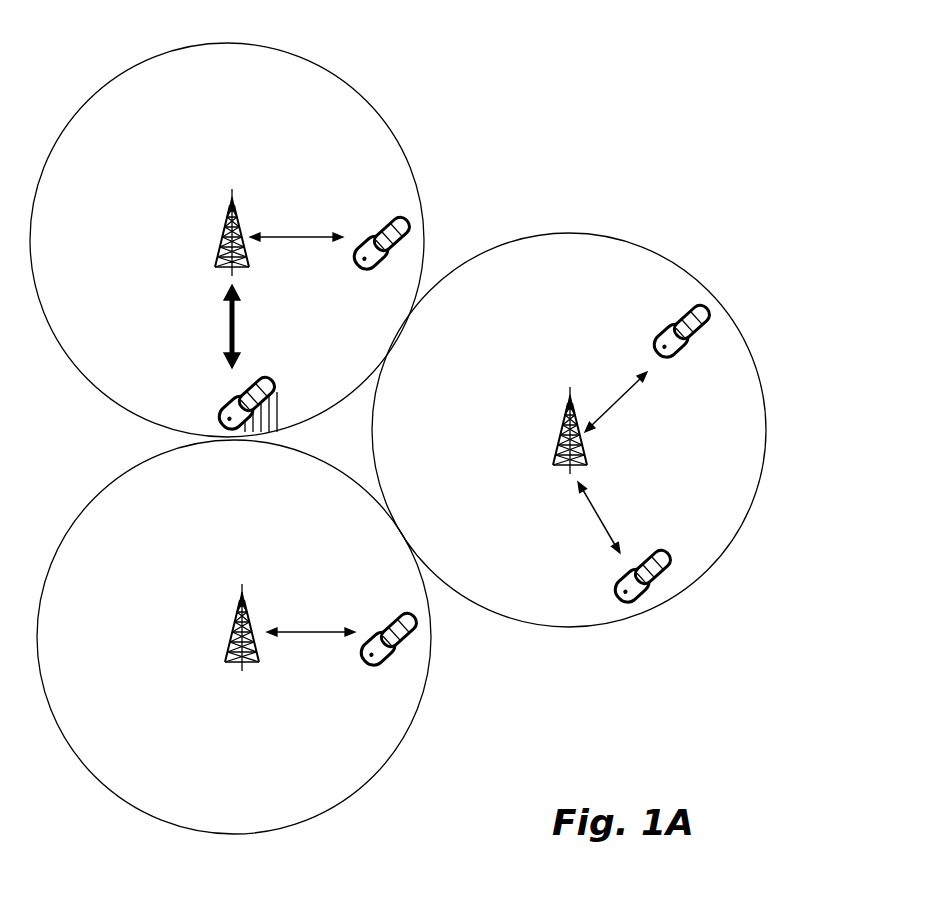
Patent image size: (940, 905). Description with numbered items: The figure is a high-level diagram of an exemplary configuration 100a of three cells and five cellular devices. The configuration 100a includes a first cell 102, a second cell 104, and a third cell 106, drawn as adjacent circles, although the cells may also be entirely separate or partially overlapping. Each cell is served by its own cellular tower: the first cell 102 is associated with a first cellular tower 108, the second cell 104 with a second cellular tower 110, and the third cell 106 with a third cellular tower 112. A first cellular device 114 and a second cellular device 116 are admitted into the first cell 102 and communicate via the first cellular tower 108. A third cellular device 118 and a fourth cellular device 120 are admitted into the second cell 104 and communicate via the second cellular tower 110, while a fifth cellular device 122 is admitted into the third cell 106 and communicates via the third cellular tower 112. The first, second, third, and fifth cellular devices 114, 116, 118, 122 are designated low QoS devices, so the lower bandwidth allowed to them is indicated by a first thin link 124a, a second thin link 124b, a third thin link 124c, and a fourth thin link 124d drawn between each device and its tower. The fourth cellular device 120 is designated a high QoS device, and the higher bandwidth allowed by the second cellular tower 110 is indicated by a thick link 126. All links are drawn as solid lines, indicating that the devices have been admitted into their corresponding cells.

The configuration 100a is at (864, 100).
The first cell 102 is at (627, 236).
The second cell 104 is at (330, 68).
The third cell 106 is at (350, 793).
The first cellular tower 108 is at (568, 395).
The second cellular tower 110 is at (231, 197).
The third cellular tower 112 is at (240, 595).
The first cellular device 114 is at (687, 298).
The second cellular device 116 is at (657, 542).
The third cellular device 118 is at (400, 205).
The fourth cellular device 120 is at (268, 372).
The fifth cellular device 122 is at (403, 605).
The first thin link 124a is at (605, 420).
The second thin link 124b is at (598, 498).
The third thin link 124c is at (273, 233).
The fourth thin link 124d is at (285, 628).
The thick link 126 is at (228, 348).